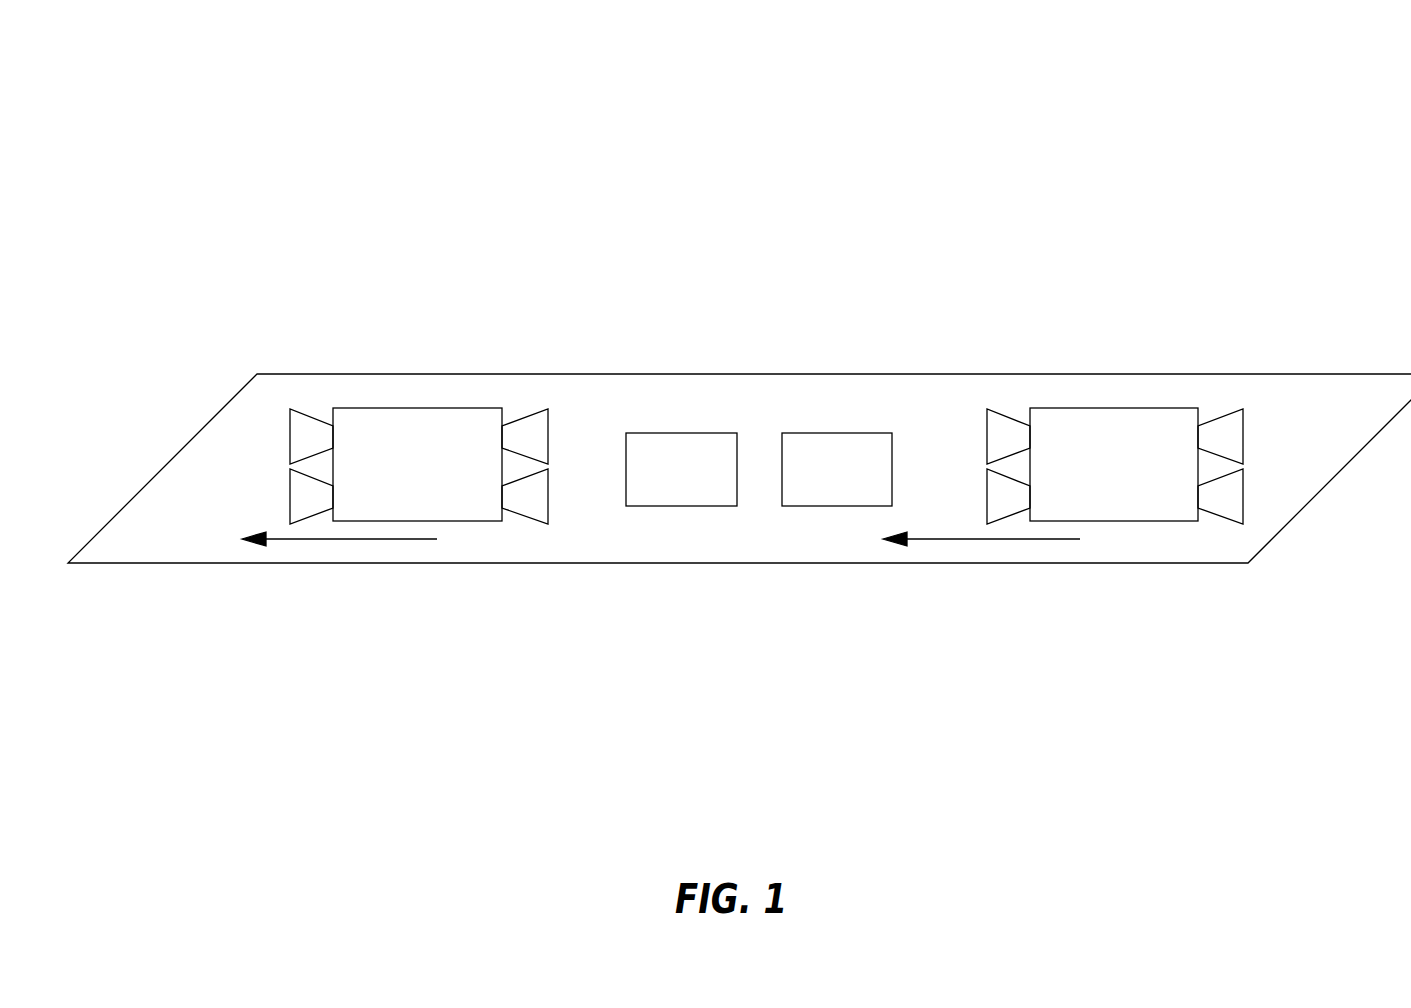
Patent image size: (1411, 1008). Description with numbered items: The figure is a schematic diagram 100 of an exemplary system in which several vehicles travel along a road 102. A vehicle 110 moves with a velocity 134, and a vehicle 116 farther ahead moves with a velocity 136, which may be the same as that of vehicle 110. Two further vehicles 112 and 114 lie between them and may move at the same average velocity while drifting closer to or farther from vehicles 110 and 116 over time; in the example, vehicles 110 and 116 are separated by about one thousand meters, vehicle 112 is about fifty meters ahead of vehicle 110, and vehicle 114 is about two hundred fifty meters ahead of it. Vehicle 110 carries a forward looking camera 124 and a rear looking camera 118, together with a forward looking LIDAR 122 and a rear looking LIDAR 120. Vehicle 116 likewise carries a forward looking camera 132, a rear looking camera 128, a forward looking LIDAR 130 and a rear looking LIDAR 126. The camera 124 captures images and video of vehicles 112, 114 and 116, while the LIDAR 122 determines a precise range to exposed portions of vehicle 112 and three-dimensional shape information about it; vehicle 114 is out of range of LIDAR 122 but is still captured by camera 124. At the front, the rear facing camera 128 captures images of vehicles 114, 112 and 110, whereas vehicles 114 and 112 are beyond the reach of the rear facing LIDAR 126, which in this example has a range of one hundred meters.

The diagram 100 is at (739, 317).
The road 102 is at (518, 377).
The vehicle 110 is at (1118, 408).
The vehicle 112 is at (835, 432).
The vehicle 114 is at (675, 432).
The vehicle 116 is at (393, 408).
The rear looking camera 118 is at (1243, 420).
The rear looking LIDAR 120 is at (1243, 487).
The forward looking LIDAR 122 is at (985, 503).
The forward looking camera 124 is at (985, 434).
The rear looking LIDAR 126 is at (548, 480).
The rear looking camera 128 is at (548, 416).
The forward looking LIDAR 130 is at (290, 506).
The forward looking camera 132 is at (290, 437).
The velocity 134 is at (977, 540).
The velocity 136 is at (347, 540).